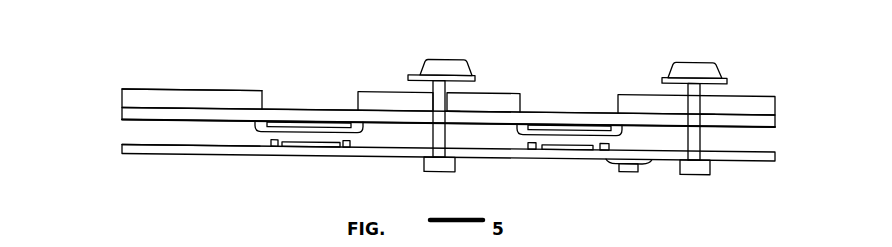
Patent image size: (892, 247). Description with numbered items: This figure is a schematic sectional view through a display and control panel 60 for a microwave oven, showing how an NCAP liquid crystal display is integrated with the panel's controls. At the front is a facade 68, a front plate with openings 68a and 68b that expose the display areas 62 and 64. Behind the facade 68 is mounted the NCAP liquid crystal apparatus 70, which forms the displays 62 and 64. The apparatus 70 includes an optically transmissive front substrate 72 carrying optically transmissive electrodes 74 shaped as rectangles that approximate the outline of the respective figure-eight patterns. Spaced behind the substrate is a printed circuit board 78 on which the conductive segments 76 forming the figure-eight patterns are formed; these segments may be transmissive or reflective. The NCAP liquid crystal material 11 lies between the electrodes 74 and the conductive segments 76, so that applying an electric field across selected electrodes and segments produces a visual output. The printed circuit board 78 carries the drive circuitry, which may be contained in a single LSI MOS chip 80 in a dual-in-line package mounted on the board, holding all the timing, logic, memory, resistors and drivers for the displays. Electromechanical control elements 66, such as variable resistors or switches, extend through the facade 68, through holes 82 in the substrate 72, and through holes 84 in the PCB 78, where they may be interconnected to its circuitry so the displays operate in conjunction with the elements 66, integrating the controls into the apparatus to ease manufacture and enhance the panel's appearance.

The NCAP liquid crystal material 11 is at (267, 122).
The display and control panel 60 is at (153, 102).
The display area 62 is at (357, 95).
The display area 64 is at (613, 100).
The control elements 66 is at (447, 60).
The facade 68 is at (203, 102).
The opening 68a is at (281, 88).
The opening 68b is at (607, 68).
The NCAP liquid crystal apparatus 70 is at (128, 134).
The front substrate 72 is at (122, 112).
The electrodes 74 is at (307, 122).
The conductive segments 76 is at (305, 158).
The printed circuit board 78 is at (185, 156).
The MOS chip 80 is at (628, 172).
The holes 82 is at (457, 117).
The holes 84 is at (453, 155).